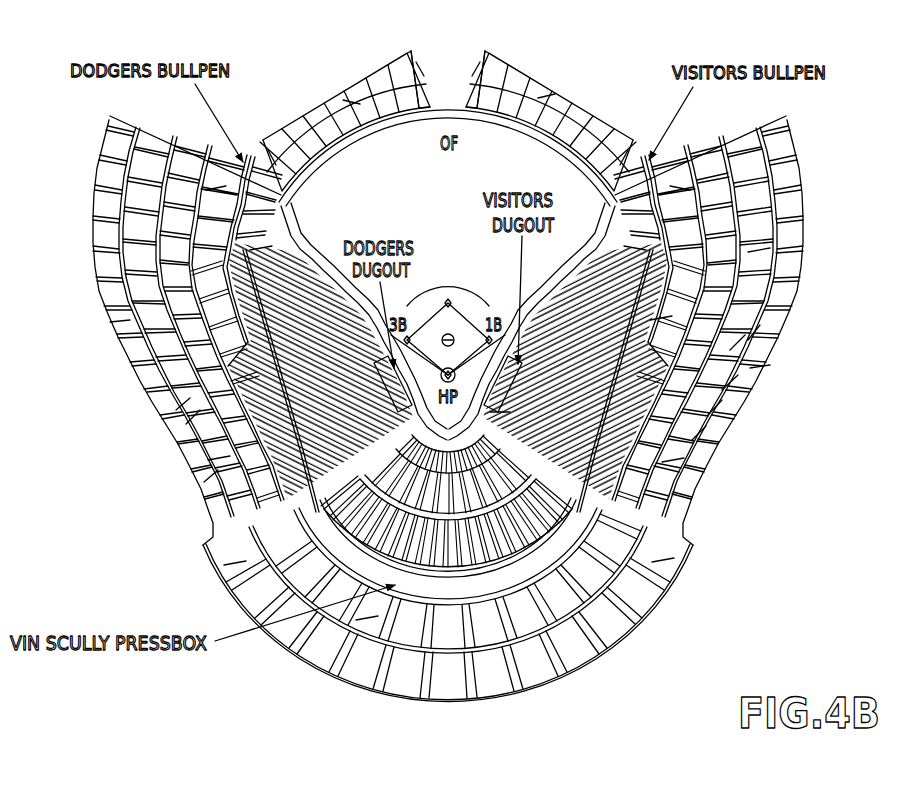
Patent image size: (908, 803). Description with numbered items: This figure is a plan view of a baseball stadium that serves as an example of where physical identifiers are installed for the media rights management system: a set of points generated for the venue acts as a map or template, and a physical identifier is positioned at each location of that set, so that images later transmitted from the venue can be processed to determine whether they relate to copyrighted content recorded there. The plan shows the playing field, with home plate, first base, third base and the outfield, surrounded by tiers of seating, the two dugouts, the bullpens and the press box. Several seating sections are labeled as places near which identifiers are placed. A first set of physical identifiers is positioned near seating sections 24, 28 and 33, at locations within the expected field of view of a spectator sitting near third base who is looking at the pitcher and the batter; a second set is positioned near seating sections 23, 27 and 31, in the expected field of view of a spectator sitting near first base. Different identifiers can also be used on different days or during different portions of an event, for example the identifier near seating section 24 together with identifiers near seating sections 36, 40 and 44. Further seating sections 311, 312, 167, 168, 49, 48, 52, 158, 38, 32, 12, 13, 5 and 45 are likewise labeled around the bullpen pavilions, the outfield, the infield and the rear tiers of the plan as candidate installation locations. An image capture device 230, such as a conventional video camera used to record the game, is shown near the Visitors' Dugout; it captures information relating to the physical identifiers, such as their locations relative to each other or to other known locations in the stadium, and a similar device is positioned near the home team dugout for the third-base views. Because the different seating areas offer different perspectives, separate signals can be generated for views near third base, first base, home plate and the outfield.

The left bullpen pavilion section 311 is at (366, 81).
The right bullpen pavilion section 312 is at (528, 77).
The left field reserve section 167 is at (216, 172).
The right field reserve section 168 is at (680, 171).
The left field box section 49 is at (269, 232).
The right field box section 48 is at (625, 238).
The right field upper section 52 is at (767, 236).
The right field loge section 158 is at (668, 304).
The seating section 44 is at (737, 342).
The seating section 40 is at (753, 330).
The right side top deck section 38 is at (768, 355).
The seating section 36 is at (730, 380).
The right side field level 32 is at (715, 407).
The seating section 28 is at (681, 450).
The seating section 24 is at (700, 432).
The right rear reserve section 12 is at (671, 552).
The left rear reserve section 13 is at (227, 556).
The rear top deck section 5 is at (362, 615).
The left side top deck section 45 is at (112, 311).
The seating section 33 is at (182, 401).
The seating section 31 is at (192, 414).
The seating section 27 is at (210, 449).
The seating section 23 is at (212, 471).
The image capture device 230 is at (500, 394).